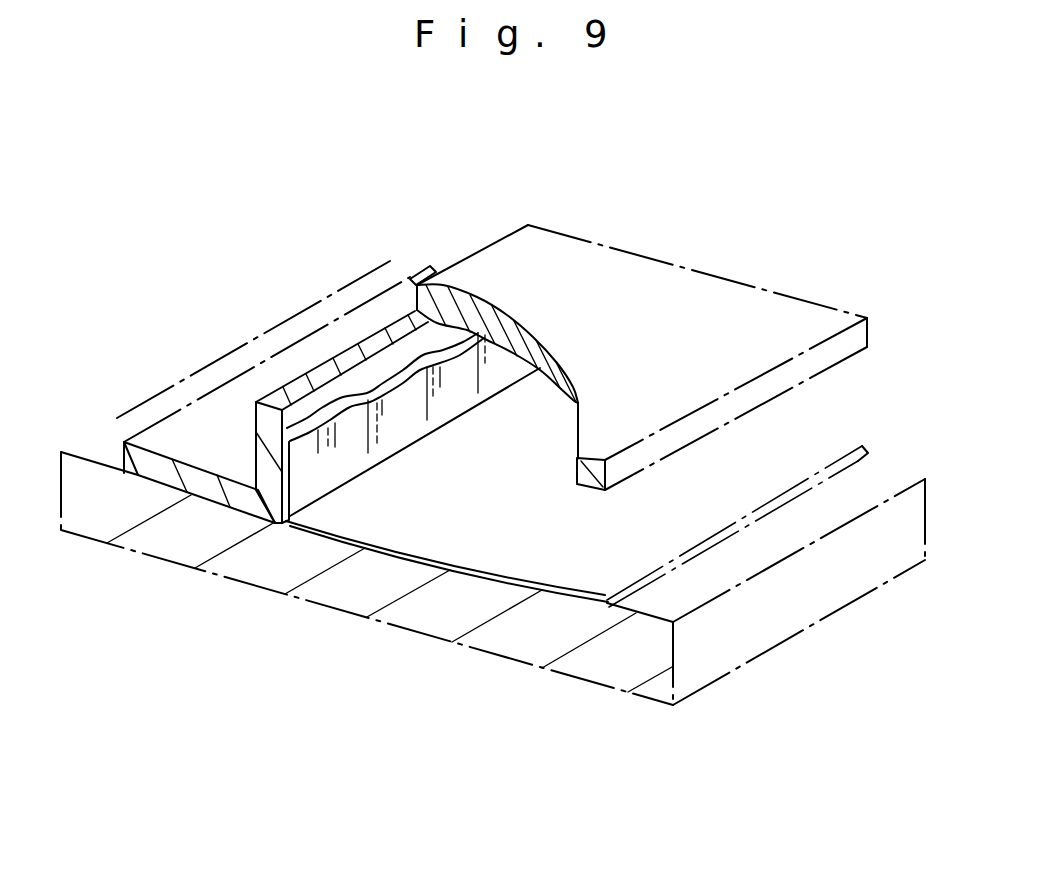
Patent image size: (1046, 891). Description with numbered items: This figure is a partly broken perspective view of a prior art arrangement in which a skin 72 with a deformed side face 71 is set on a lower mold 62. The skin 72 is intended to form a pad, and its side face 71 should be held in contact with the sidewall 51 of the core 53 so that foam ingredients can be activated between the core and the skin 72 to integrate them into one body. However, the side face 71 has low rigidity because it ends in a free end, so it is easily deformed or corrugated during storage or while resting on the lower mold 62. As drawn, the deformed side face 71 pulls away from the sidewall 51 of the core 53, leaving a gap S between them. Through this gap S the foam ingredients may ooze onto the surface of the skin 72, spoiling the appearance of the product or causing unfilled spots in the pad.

The sidewall 51 is at (332, 367).
The core 53 is at (702, 302).
The lower mold 62 is at (727, 628).
The side face 71 is at (422, 407).
The skin 72 is at (817, 452).
The gap S is at (393, 363).